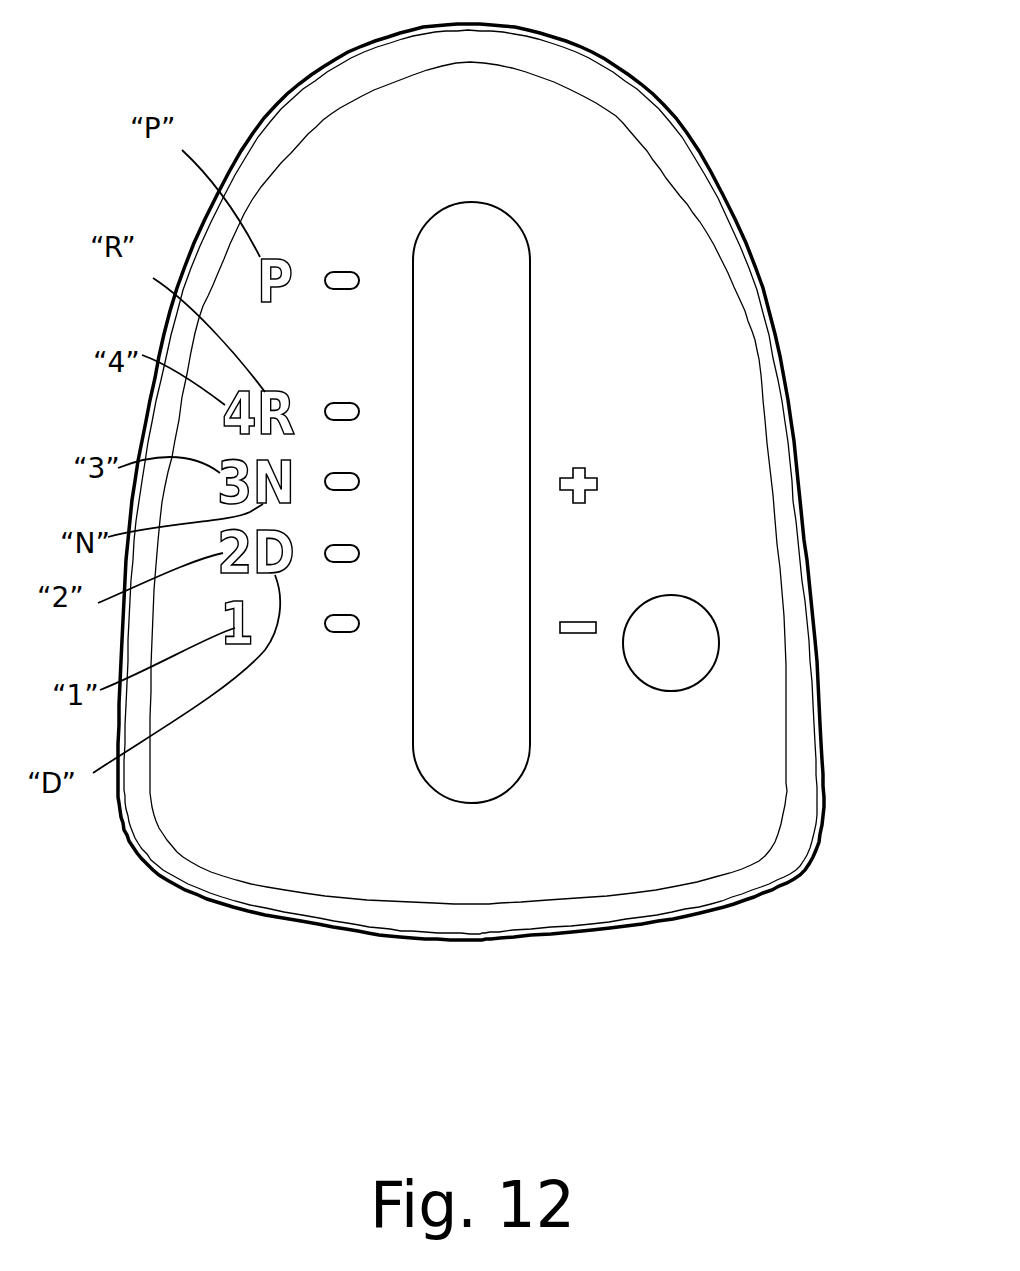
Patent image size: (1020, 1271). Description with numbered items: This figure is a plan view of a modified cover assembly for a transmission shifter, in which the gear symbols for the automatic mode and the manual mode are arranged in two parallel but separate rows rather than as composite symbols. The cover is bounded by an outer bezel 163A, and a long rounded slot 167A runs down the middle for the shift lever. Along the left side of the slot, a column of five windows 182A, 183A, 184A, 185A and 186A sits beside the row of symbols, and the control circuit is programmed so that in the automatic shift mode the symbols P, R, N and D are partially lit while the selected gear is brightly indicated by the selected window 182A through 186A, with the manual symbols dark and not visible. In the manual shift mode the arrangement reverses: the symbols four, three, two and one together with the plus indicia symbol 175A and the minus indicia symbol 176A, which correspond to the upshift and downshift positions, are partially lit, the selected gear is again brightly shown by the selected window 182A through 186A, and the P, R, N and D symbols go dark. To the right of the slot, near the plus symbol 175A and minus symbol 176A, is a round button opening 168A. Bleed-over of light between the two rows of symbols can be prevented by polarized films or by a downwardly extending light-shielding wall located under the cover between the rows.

The bezel 163A is at (624, 76).
The slot 167A is at (515, 745).
The button opening 168A is at (708, 640).
The plus indicia symbol 175A is at (584, 468).
The minus indicia symbol 176A is at (582, 621).
The window 182A is at (359, 279).
The window 183A is at (359, 411).
The window 184A is at (359, 480).
The window 185A is at (350, 562).
The window 186A is at (348, 632).